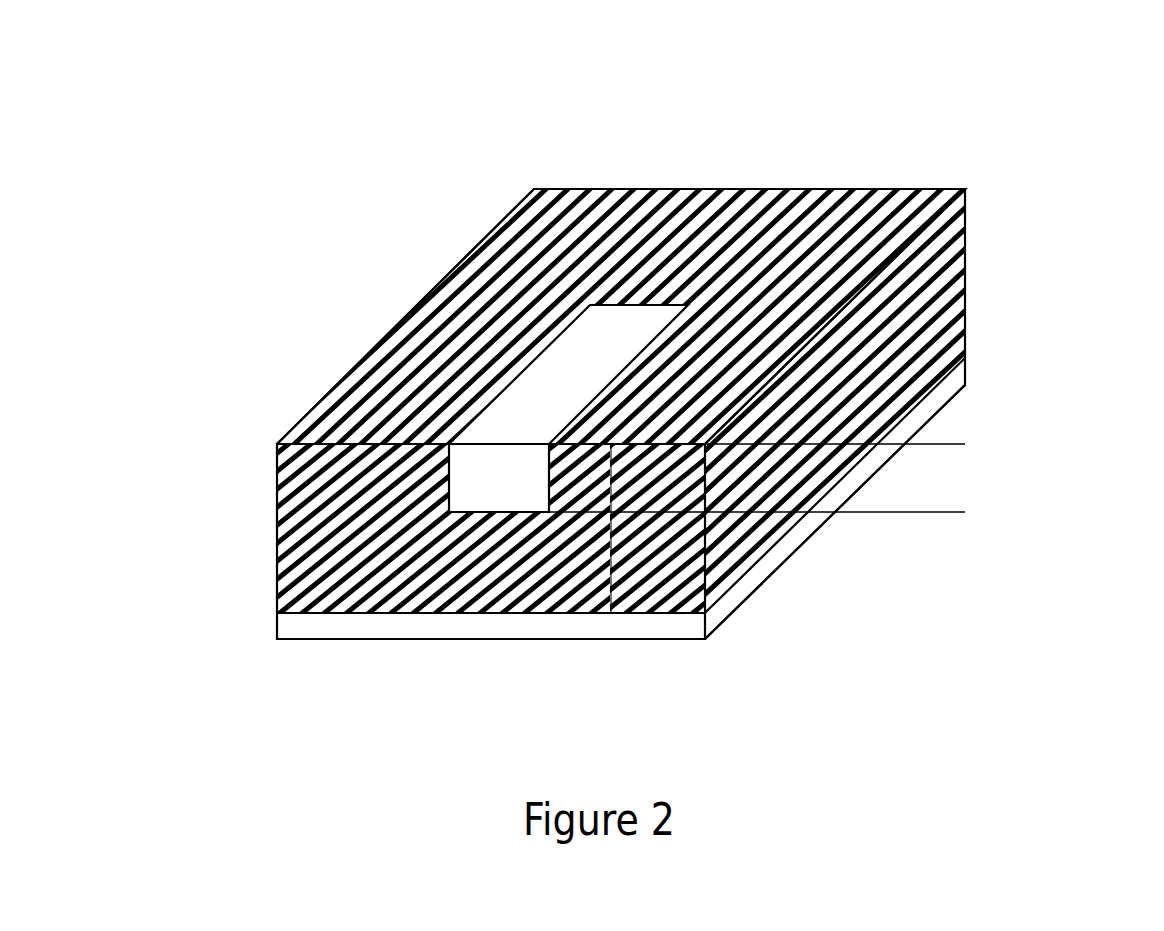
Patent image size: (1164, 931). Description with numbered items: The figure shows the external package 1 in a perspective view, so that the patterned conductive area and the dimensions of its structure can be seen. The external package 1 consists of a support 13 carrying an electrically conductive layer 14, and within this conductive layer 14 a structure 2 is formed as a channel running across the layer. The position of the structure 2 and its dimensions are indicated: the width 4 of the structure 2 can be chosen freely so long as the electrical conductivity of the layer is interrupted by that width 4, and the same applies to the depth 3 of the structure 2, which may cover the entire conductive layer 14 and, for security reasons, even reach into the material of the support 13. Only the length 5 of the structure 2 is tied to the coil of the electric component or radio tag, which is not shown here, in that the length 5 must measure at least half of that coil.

The external package 1 is at (993, 190).
The structure 2 is at (617, 347).
The depth 3 is at (933, 444).
The width 4 is at (449, 512).
The length 5 is at (295, 305).
The support 13 is at (632, 625).
The electrically conductive layer 14 is at (925, 189).